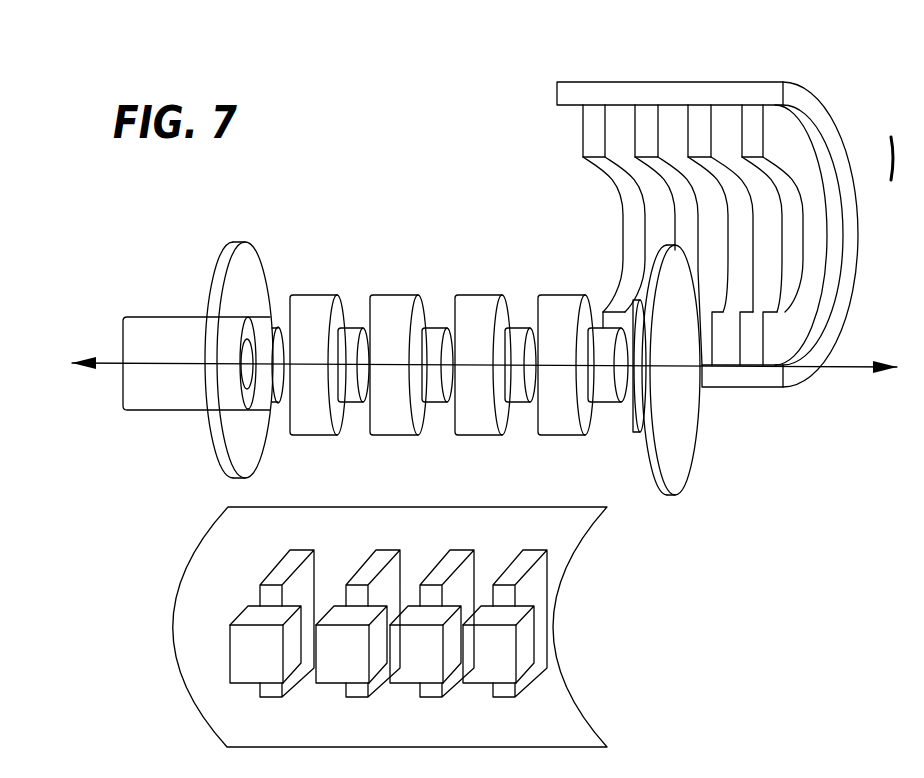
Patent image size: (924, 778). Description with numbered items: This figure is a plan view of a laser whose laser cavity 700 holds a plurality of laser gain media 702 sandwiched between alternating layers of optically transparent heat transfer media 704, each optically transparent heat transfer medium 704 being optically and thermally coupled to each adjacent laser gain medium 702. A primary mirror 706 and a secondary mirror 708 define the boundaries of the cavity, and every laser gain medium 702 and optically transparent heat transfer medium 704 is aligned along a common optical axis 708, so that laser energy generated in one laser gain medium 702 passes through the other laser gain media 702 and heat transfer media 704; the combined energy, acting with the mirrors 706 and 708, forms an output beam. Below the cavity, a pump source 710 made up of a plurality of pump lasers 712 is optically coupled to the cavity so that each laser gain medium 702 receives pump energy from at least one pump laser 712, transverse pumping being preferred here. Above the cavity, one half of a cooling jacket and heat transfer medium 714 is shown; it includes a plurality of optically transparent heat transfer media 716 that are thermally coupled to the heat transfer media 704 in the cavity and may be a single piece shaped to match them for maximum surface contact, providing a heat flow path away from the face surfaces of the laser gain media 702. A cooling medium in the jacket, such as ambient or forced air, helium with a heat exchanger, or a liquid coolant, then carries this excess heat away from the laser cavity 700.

The laser cavity 700 is at (411, 192).
The laser gain medium 702 is at (607, 395).
The optically transparent heat transfer medium 704 is at (563, 305).
The primary mirror 706 is at (698, 450).
The secondary mirror / common optical axis 708 is at (220, 450).
The pump source 710 is at (192, 718).
The pump laser 712 is at (533, 557).
The cooling jacket and heat transfer medium 714 is at (843, 153).
The optically transparent heat transfer medium 716 is at (753, 120).